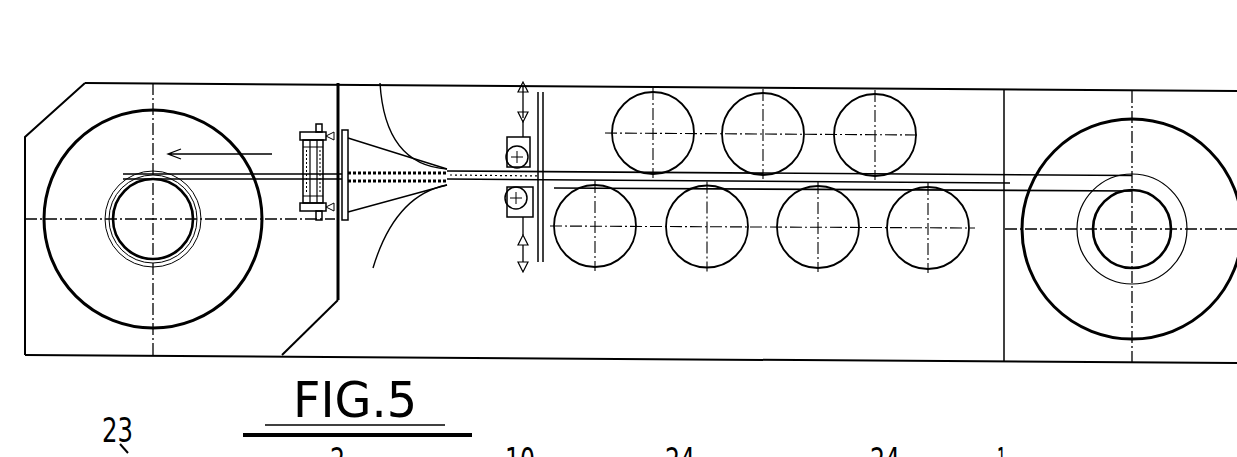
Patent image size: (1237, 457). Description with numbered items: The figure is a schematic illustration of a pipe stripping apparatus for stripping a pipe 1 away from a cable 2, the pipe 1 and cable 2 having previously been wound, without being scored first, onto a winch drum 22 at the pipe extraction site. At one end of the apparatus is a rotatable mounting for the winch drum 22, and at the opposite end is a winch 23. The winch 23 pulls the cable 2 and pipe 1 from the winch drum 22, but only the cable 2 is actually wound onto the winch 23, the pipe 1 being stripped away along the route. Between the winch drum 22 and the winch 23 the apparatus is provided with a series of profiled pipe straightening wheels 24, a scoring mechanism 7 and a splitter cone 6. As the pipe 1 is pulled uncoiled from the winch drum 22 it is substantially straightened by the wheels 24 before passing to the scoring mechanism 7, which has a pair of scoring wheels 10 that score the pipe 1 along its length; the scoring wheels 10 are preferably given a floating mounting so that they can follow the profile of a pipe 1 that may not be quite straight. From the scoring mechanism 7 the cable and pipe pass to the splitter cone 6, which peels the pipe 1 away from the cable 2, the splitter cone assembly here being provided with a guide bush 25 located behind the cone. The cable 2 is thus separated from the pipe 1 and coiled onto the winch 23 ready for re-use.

The pipe 1 is at (390, 223).
The cable 2 is at (263, 173).
The splitter cone 6 is at (360, 160).
The scoring mechanism 7 is at (513, 135).
The scoring wheels 10 is at (510, 157).
The winch drum 22 is at (1068, 308).
The winch 23 is at (143, 130).
The profiled pipe straightening wheels 24 is at (658, 120).
The guide bush 25 is at (302, 205).